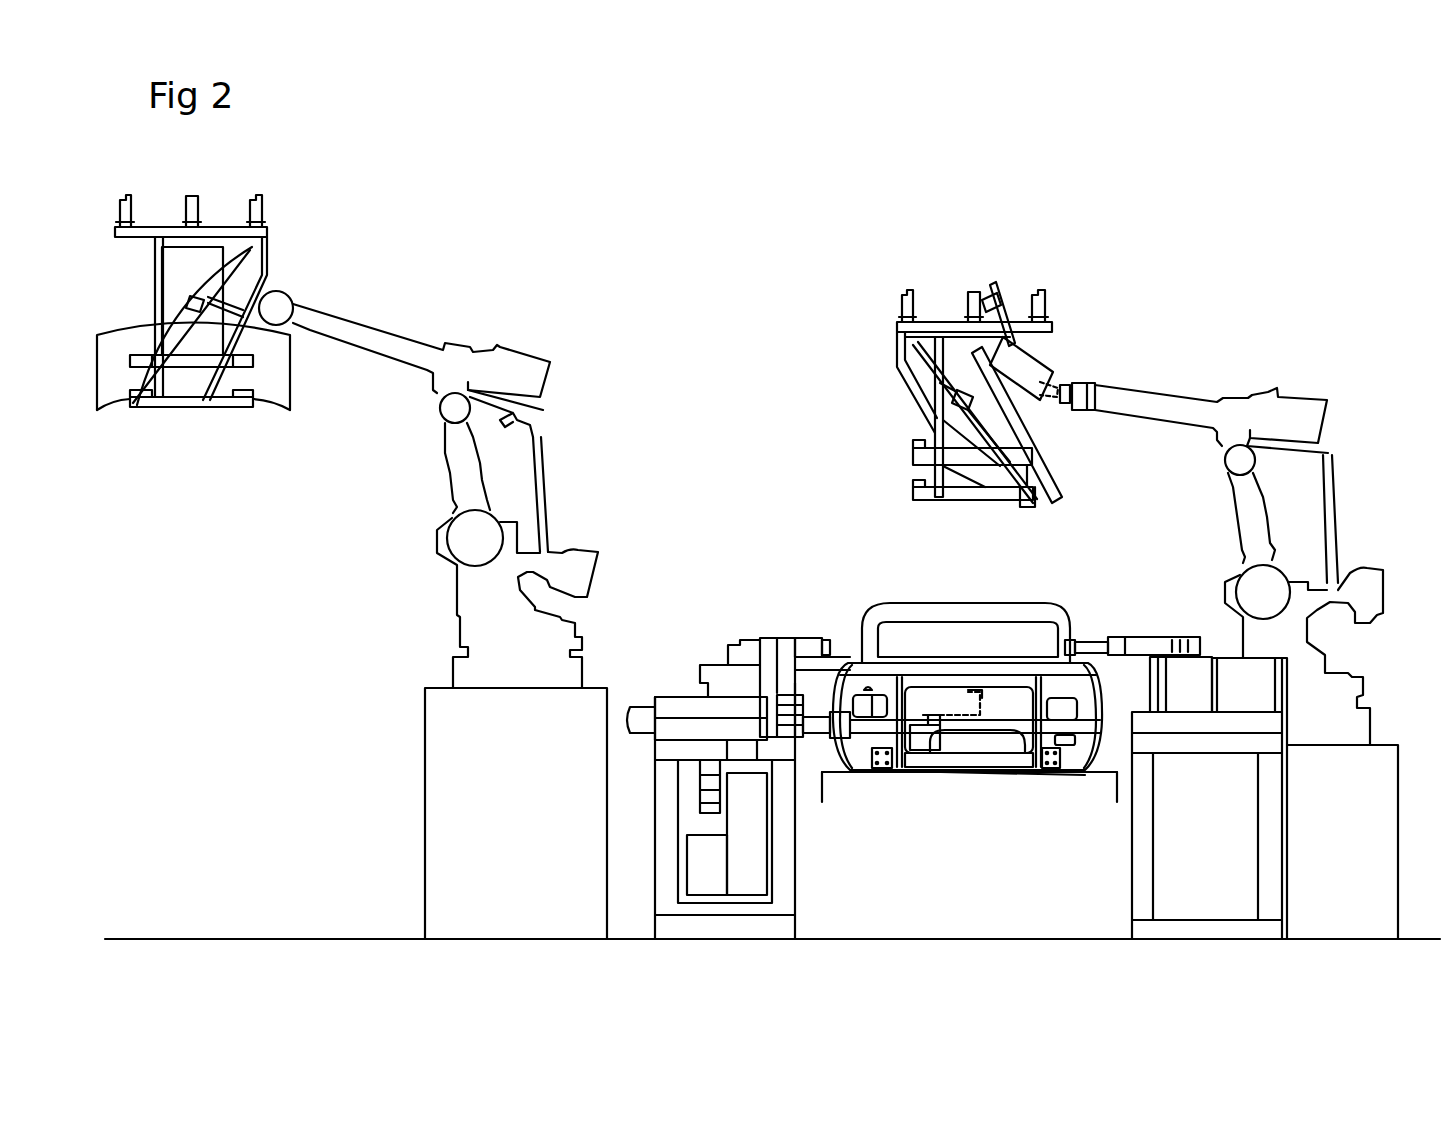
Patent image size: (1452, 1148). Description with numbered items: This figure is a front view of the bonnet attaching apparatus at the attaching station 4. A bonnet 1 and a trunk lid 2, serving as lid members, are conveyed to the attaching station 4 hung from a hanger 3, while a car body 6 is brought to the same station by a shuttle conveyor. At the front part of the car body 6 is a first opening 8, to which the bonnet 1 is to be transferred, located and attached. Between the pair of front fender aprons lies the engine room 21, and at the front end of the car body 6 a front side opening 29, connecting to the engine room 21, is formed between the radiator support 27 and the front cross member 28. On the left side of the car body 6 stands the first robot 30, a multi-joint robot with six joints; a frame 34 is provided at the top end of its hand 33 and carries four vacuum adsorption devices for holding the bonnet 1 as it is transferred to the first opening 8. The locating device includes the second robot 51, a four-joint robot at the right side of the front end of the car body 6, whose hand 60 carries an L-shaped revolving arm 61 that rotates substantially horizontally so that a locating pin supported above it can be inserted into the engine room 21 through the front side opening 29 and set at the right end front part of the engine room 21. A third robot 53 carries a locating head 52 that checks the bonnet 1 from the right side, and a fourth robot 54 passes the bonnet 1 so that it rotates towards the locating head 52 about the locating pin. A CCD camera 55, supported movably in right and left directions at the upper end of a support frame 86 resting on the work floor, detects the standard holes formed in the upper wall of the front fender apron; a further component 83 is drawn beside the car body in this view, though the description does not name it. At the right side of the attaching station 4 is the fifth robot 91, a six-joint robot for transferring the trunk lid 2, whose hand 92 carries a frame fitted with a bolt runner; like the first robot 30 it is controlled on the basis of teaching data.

The bonnet 1 is at (188, 322).
The trunk lid 2 is at (293, 384).
The hanger 3 is at (272, 240).
The attaching station 4 is at (731, 413).
The car body 6 is at (1055, 610).
The first opening 8 is at (908, 665).
The engine room 21 is at (1020, 717).
The radiator support 27 is at (973, 678).
The front cross member 28 is at (982, 758).
The front side opening 29 is at (1013, 742).
The first robot 30 is at (1355, 428).
The hand 33 is at (1092, 383).
The frame 34 is at (1045, 460).
The second robot 51 is at (672, 682).
The locating head 52 is at (850, 657).
The third robot 53 is at (731, 640).
The fourth robot 54 is at (1187, 632).
The CCD camera 55 is at (822, 650).
The hand 60 is at (878, 750).
The revolving arm 61 is at (930, 748).
The clamp cylinder 83 is at (1080, 637).
The support frame 86 is at (783, 645).
The fifth robot 91 is at (555, 341).
The hand 92 is at (303, 307).